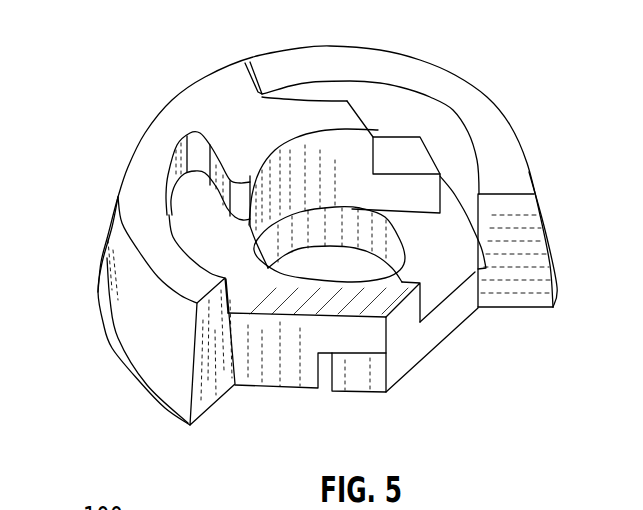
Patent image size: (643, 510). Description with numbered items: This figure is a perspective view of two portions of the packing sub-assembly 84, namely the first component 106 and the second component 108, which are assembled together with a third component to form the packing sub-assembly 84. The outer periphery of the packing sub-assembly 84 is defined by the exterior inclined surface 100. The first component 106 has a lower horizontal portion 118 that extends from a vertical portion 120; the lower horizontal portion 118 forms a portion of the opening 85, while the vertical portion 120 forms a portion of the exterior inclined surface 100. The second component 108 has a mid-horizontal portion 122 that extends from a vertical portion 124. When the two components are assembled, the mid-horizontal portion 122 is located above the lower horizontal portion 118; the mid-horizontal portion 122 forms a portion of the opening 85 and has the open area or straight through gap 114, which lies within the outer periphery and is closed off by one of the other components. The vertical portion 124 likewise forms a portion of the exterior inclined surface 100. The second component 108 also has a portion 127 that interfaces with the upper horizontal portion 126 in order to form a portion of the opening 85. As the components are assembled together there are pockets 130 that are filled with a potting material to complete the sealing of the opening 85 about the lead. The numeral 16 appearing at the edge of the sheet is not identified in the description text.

The retainer assembly 84 is at (510, 94).
The cavity 85 is at (307, 223).
The outer surface 100 is at (123, 297).
The wall 106 is at (507, 152).
The slot 108 is at (148, 157).
The ramp surface 114 is at (447, 228).
The tab 118 is at (403, 352).
The ledge 120 is at (508, 213).
The bore 122 is at (313, 297).
The section face 124 is at (210, 335).
The notch 127 is at (250, 147).
The step 130 is at (403, 123).
The housing 16 is at (1, 509).
The stop 126 is at (57, 506).